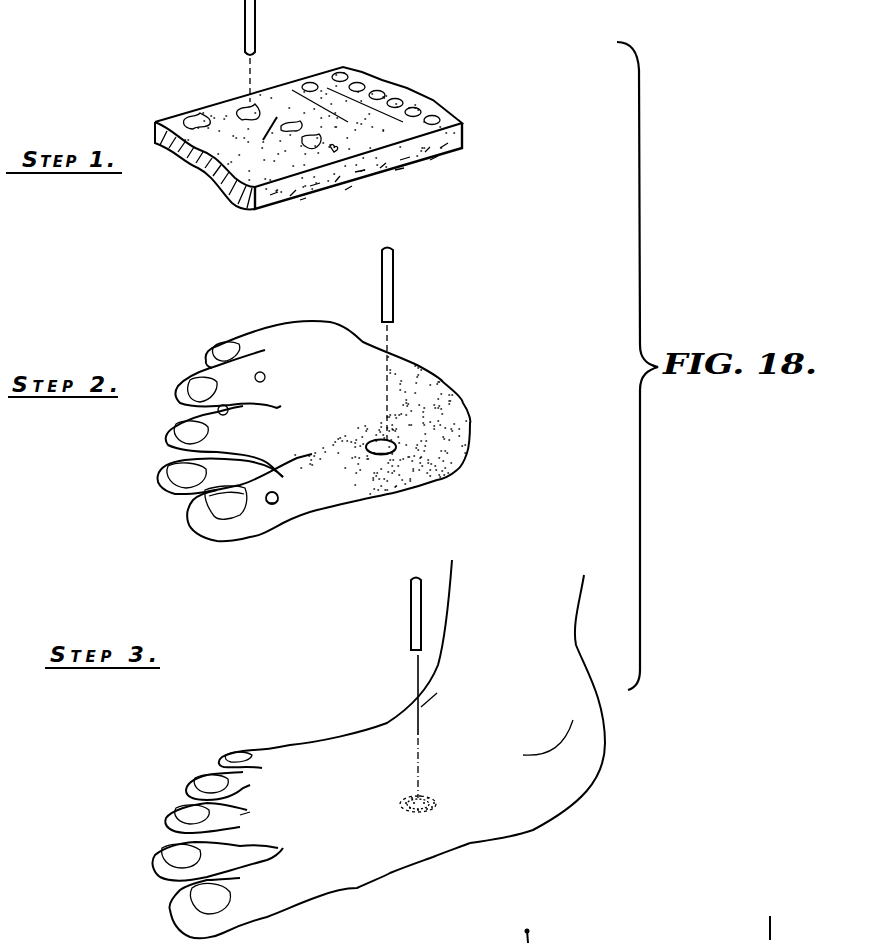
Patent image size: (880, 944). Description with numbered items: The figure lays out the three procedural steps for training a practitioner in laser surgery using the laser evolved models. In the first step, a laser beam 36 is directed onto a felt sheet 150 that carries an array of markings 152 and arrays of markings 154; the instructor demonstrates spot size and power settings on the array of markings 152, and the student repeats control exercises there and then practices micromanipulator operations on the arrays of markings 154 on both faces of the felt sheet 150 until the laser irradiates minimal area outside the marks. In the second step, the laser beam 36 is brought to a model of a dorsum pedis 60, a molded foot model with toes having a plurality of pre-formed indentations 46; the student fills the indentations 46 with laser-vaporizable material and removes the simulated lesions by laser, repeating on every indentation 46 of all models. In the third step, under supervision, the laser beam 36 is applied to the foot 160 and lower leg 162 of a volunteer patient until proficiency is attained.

The laser beam 36 is at (250, 68).
The indentations 46 is at (280, 500).
The model of a dorsum pedis 60 is at (320, 358).
The felt sheet 150 is at (387, 158).
The array of markings 152 is at (433, 120).
The arrays of markings 154 is at (313, 148).
The foot 160 is at (390, 857).
The lower leg 162 is at (565, 645).